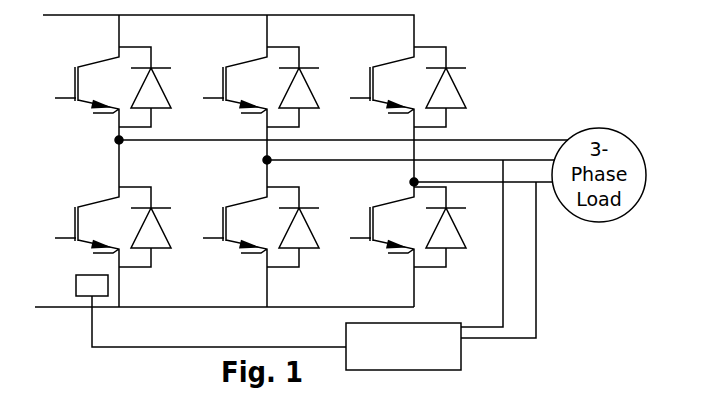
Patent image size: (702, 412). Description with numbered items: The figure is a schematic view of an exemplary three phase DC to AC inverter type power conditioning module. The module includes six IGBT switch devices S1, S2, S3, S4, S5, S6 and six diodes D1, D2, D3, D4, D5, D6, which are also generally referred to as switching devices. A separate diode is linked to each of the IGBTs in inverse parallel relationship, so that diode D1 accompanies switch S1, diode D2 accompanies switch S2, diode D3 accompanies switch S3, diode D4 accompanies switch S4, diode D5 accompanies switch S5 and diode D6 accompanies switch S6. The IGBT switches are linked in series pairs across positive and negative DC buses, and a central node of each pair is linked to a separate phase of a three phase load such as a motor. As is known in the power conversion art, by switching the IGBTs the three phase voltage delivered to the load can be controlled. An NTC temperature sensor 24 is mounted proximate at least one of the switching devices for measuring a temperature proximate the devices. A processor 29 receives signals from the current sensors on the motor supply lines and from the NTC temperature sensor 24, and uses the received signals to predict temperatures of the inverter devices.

The NTC temperature sensor 24 is at (76, 285).
The processor 29 is at (403, 370).
The IGBT switch device S1 is at (382, 223).
The IGBT switch device S2 is at (382, 83).
The IGBT switch device S3 is at (235, 223).
The IGBT switch device S4 is at (235, 83).
The IGBT switch device S5 is at (87, 223).
The IGBT switch device S6 is at (87, 83).
The diode D1 is at (450, 227).
The diode D2 is at (454, 87).
The diode D3 is at (304, 227).
The diode D4 is at (303, 87).
The diode D5 is at (154, 227).
The diode D6 is at (154, 87).